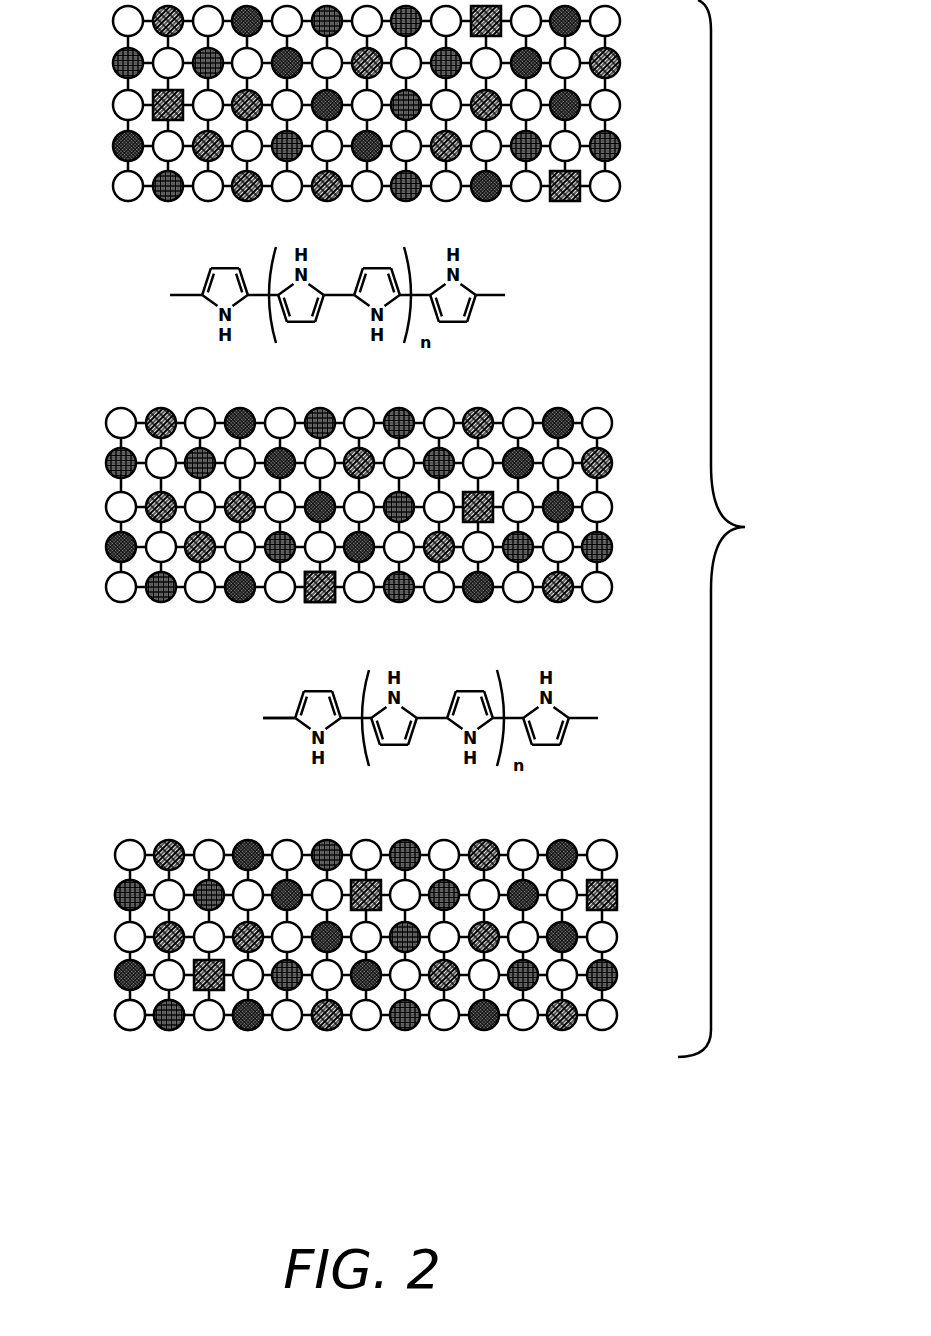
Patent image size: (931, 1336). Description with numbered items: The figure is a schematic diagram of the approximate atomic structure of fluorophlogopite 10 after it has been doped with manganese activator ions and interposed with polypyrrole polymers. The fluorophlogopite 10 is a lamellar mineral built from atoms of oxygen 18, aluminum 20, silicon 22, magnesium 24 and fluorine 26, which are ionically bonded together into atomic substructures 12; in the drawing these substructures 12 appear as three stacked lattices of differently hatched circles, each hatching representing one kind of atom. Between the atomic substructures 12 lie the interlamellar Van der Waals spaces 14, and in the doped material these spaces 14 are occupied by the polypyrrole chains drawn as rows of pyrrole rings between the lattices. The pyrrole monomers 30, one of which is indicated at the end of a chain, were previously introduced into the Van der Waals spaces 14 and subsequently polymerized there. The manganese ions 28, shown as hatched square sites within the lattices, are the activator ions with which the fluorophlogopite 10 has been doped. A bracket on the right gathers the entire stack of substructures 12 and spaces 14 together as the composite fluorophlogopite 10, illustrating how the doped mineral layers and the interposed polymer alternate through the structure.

The fluorophlogopite 10 is at (732, 528).
The atomic substructures 12 is at (647, 88).
The Van der Waals spaces 14 is at (628, 251).
The oxygen atoms 18 is at (113, 1013).
The aluminum atoms 20 is at (164, 1030).
The silicon atoms 22 is at (241, 1030).
The magnesium atoms 24 is at (321, 1030).
The fluorine atoms 26 is at (115, 886).
The manganese ions 28 is at (315, 603).
The pyrrole monomers 30 is at (267, 693).